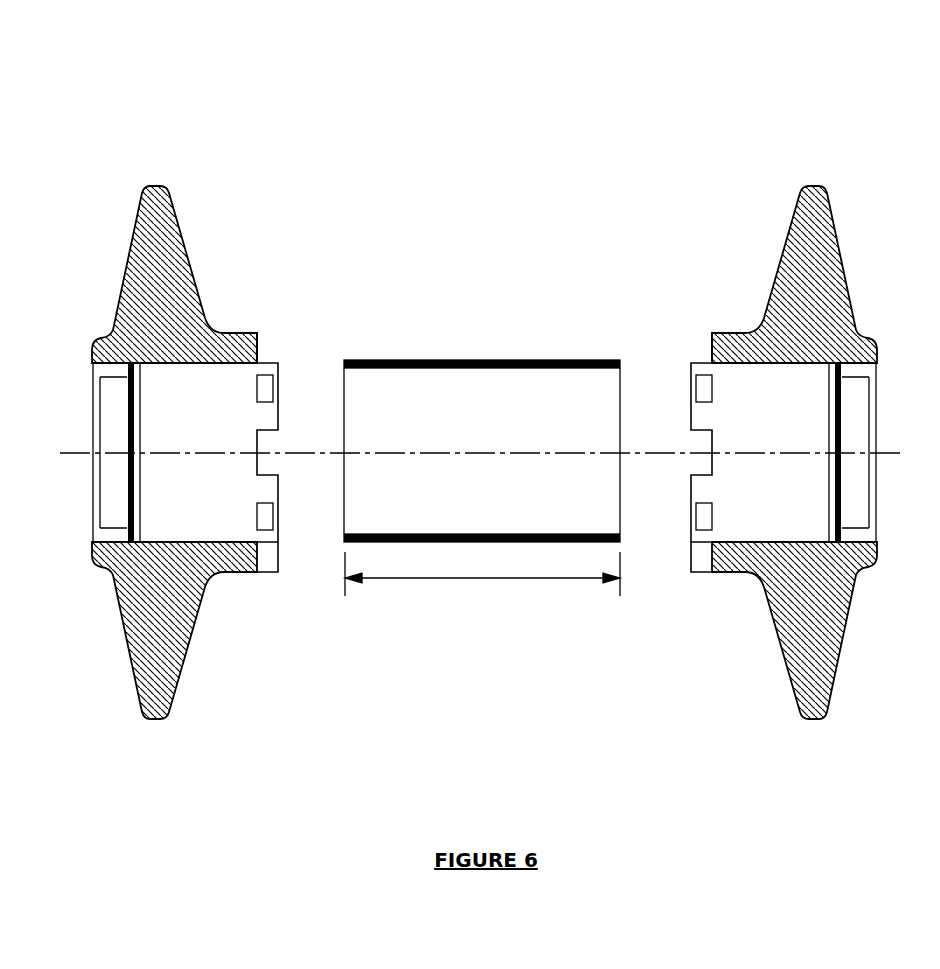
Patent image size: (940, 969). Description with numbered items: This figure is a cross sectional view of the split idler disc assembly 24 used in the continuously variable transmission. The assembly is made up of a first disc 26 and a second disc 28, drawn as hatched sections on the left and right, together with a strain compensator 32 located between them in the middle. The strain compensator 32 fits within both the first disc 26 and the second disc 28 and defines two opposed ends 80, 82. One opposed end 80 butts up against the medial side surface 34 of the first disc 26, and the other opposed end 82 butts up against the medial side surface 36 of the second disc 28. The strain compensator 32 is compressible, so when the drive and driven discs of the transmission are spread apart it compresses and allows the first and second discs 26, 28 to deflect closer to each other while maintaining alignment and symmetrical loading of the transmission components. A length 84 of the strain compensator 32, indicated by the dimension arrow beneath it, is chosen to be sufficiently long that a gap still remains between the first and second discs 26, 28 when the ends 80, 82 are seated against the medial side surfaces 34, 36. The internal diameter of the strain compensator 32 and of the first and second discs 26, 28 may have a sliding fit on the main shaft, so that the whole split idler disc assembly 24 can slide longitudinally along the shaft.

The split idler disc assembly 24 is at (482, 372).
The first disc 26 is at (810, 412).
The second disc 28 is at (156, 412).
The strain compensator 32 is at (492, 438).
The medial side surface of the first disc 34 is at (797, 345).
The medial side surface of the second disc 36 is at (132, 318).
The opposed end 80 is at (620, 360).
The opposed end 82 is at (344, 360).
The length 84 is at (483, 578).